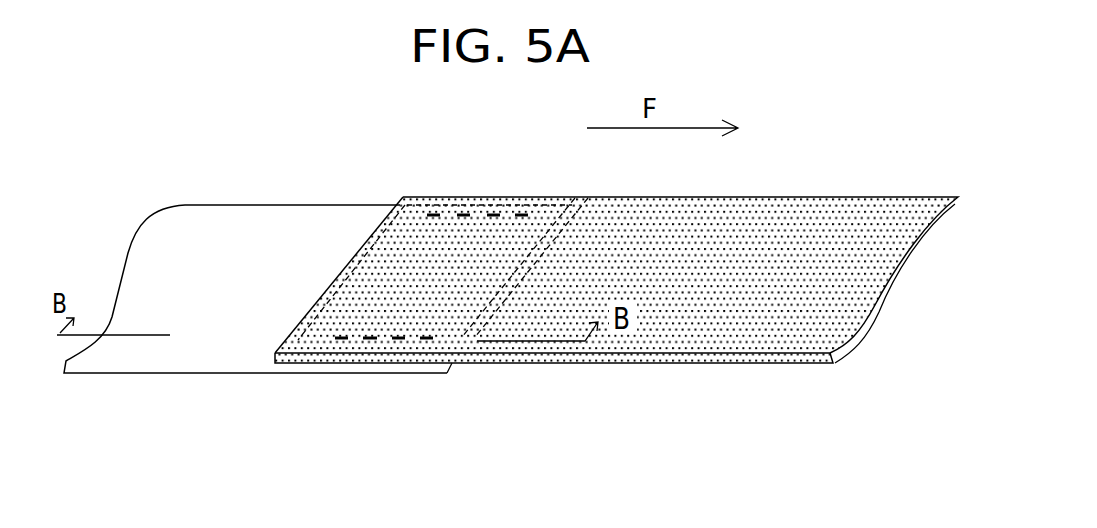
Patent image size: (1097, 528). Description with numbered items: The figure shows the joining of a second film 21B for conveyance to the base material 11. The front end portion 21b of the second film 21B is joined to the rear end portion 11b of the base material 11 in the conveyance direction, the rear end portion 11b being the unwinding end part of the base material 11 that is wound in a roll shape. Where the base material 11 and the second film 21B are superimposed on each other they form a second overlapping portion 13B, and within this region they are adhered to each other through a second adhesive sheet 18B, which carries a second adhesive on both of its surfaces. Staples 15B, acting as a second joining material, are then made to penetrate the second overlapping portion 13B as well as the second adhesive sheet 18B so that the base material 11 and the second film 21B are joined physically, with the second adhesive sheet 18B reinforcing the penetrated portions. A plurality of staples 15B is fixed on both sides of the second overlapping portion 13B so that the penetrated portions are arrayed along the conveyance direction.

The base material 11 is at (853, 207).
The rear end portion of the base material 11b is at (406, 196).
The second film 21B is at (271, 218).
The front end portion of the second film 21b is at (448, 366).
The staples 15B is at (462, 214).
The second adhesive sheet 18B is at (352, 255).
The second overlapping portion 13B is at (335, 312).